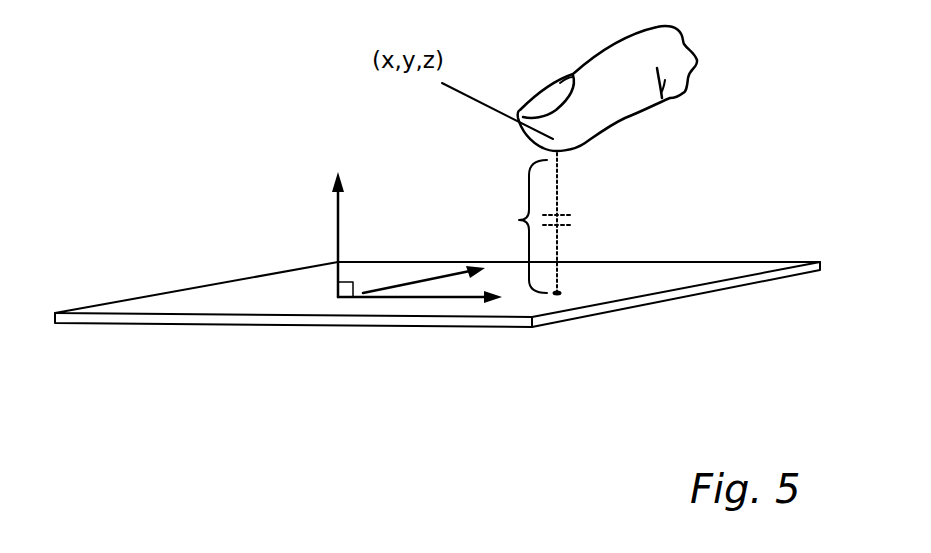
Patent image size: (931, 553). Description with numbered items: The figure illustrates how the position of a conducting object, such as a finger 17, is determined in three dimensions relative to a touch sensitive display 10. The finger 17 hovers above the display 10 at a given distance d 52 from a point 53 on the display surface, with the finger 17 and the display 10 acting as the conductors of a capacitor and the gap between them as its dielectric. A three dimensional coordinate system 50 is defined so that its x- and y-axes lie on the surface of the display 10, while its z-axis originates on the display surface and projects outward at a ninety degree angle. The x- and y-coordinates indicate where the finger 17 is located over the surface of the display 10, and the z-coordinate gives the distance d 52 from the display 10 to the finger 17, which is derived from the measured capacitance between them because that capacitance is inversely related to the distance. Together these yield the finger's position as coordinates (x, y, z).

The display 10 is at (121, 306).
The finger 17 is at (610, 117).
The three dimensional coordinate system 50 is at (297, 222).
The distance d 52 is at (528, 172).
The point 53 is at (561, 293).